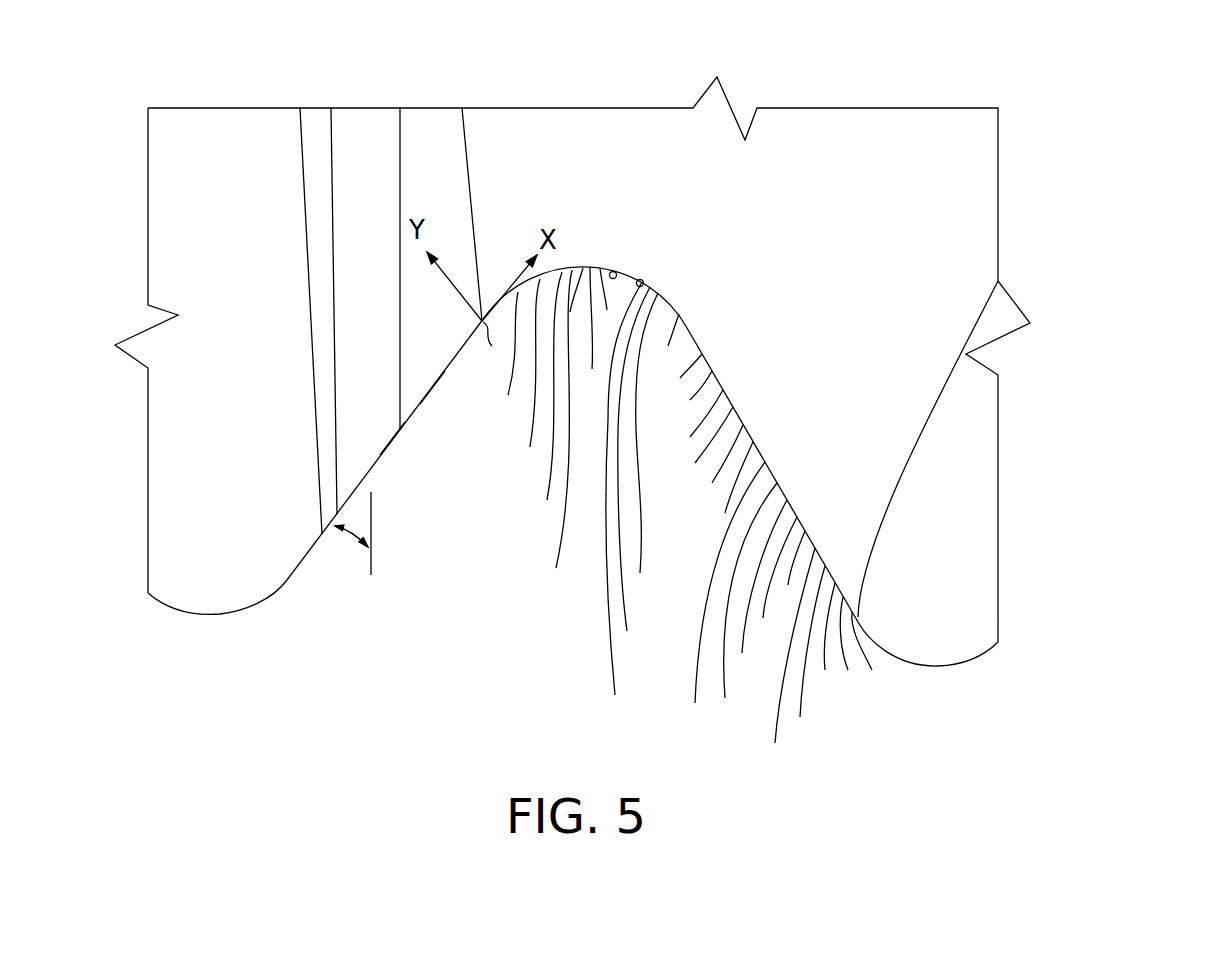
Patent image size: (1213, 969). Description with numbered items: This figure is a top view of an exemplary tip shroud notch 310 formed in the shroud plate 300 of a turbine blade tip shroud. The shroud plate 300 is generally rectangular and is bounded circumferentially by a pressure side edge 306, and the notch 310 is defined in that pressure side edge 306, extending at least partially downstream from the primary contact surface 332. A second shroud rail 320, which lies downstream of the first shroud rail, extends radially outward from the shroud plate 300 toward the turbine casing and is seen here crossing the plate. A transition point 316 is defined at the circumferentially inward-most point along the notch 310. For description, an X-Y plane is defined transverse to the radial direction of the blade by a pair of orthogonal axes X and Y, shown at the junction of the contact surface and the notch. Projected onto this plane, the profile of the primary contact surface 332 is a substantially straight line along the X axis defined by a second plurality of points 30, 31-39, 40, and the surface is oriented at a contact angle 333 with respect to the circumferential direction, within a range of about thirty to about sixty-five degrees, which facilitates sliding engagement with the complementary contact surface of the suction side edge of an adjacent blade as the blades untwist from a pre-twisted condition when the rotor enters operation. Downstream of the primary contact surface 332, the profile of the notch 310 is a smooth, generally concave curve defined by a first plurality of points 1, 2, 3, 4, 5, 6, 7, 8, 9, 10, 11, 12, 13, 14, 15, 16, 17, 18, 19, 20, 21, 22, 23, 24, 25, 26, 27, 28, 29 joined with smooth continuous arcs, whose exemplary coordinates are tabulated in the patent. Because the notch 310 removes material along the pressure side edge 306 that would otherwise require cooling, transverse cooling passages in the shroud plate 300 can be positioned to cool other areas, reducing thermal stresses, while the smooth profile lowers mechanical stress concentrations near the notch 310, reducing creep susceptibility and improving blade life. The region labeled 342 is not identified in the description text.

The point 1 is at (867, 656).
The point 2 is at (849, 650).
The point 3 is at (826, 642).
The point 4 is at (809, 659).
The point 5 is at (790, 662).
The point 6 is at (790, 574).
The point 7 is at (778, 582).
The point 8 is at (763, 591).
The point 9 is at (748, 608).
The point 10 is at (720, 601).
The point 11 is at (722, 492).
The point 12 is at (714, 466).
The point 13 is at (698, 447).
The point 14 is at (689, 425).
The point 15 is at (687, 399).
The point 16 is at (673, 378).
The point 17 is at (658, 340).
The point 18 is at (644, 450).
The point 19 is at (632, 476).
The point 20 is at (618, 507).
The point 21 is at (642, 280).
The point 22 is at (611, 271).
The point 23 is at (617, 305).
The point 24 is at (591, 333).
The point 25 is at (574, 302).
The point 26 is at (551, 435).
The point 27 is at (542, 401).
The point 28 is at (526, 378).
The point 29 is at (504, 358).
The point 30 is at (494, 351).
The points 31-39 is at (433, 390).
The point 40 is at (288, 580).
The shroud plate 300 is at (656, 371).
The pressure side edge 306 is at (217, 614).
The tip shroud notch 310 is at (485, 655).
The transition point 316 is at (590, 250).
The second shroud rail 320 is at (363, 150).
The primary contact surface 332 is at (393, 447).
The contact angle 333 is at (343, 547).
The thread body 342 is at (572, 371).